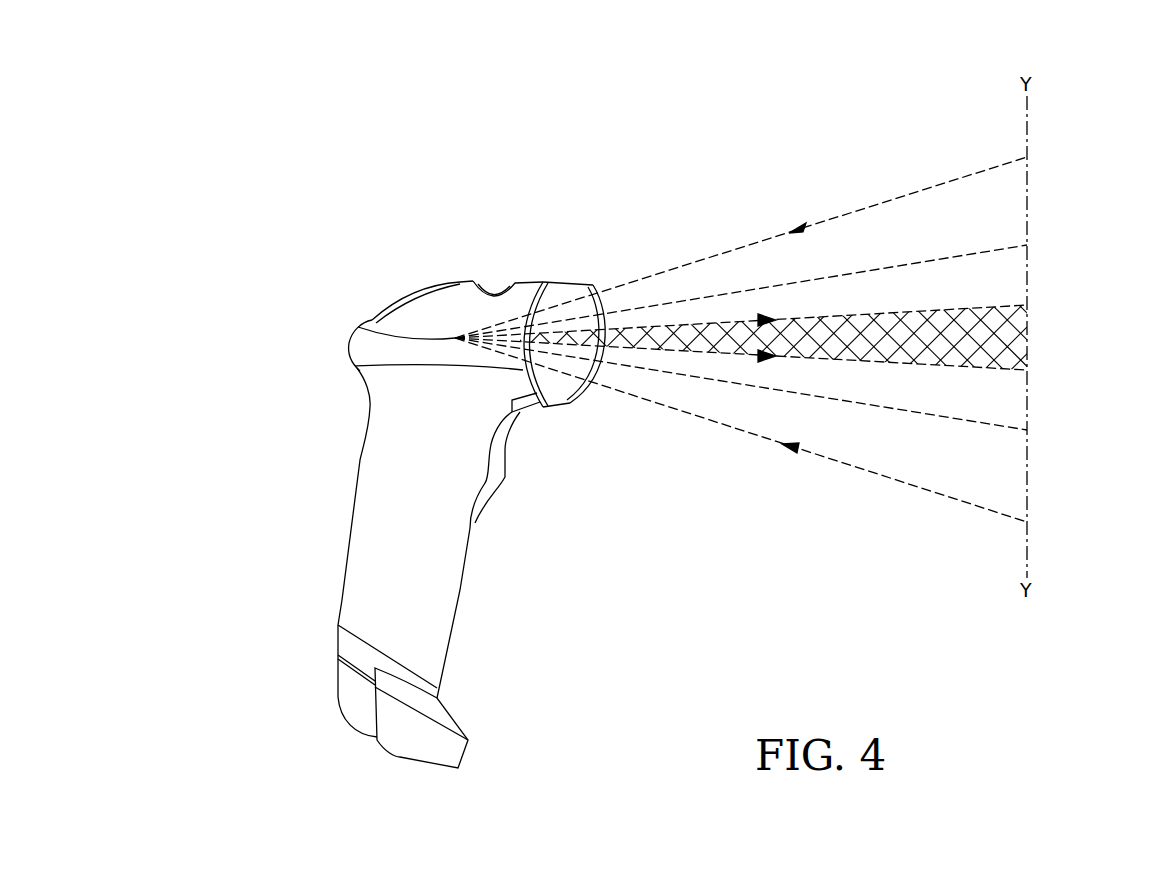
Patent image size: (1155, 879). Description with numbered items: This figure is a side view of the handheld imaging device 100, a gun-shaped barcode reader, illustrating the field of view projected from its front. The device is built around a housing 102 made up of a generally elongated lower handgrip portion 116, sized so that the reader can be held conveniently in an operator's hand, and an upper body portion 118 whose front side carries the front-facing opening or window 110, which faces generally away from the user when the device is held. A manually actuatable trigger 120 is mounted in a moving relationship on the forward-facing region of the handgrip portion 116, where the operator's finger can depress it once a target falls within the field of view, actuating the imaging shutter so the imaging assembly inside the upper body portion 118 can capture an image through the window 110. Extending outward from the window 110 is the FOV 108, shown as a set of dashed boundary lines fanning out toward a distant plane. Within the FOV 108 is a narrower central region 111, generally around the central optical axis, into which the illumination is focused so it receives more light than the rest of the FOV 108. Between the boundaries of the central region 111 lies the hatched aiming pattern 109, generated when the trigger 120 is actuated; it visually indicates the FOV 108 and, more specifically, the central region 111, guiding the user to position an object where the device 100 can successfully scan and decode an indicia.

The imaging device 100 is at (284, 306).
The housing 102 is at (457, 287).
The FOV 108 is at (893, 207).
The aiming pattern 109 is at (1030, 323).
The front-facing opening or window 110 is at (592, 283).
The central region 111 is at (972, 253).
The handgrip portion 116 is at (342, 552).
The upper body portion 118 is at (367, 327).
The trigger 120 is at (500, 468).